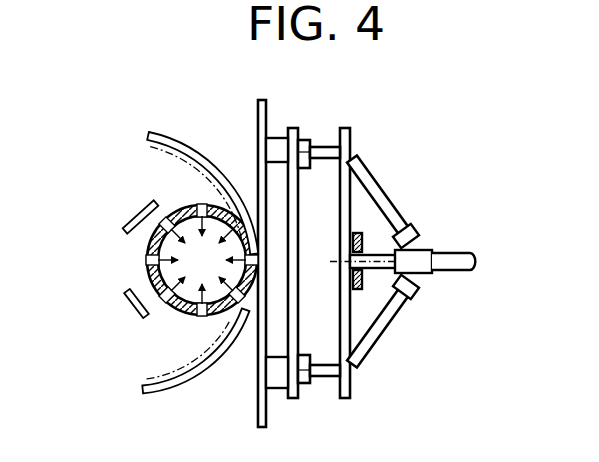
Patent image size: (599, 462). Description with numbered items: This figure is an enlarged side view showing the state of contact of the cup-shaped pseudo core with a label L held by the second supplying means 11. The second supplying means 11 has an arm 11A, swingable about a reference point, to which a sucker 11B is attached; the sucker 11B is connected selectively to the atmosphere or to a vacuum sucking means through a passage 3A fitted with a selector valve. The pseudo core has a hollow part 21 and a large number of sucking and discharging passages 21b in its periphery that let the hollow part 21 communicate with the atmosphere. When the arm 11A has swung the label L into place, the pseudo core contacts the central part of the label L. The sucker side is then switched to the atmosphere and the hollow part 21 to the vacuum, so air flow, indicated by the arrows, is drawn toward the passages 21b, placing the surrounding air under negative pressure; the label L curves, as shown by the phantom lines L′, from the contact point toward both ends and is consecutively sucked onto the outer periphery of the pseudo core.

The second supplying means 11 is at (380, 166).
The arm 11A is at (359, 236).
The sucker 11B is at (278, 145).
The passage 3A is at (455, 258).
The hollow part 21 is at (146, 250).
The sucking and discharging passage 21b is at (200, 205).
The label L is at (257, 128).
The blade L′ is at (108, 413).